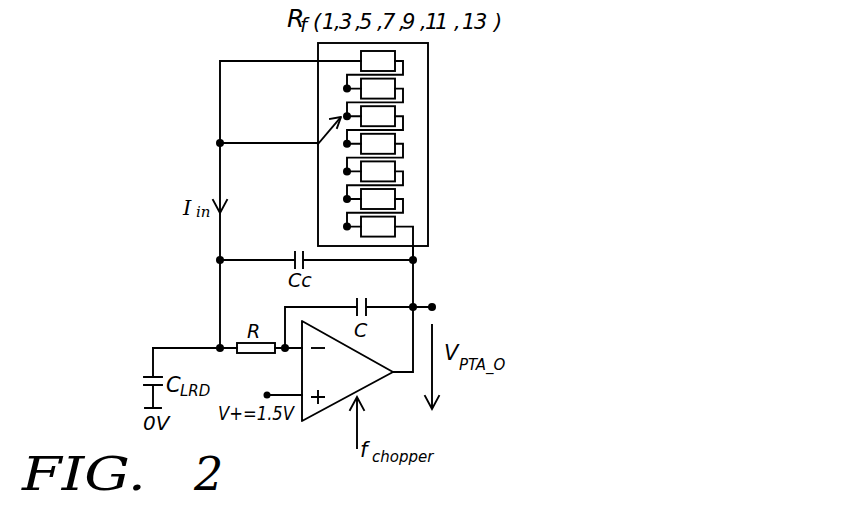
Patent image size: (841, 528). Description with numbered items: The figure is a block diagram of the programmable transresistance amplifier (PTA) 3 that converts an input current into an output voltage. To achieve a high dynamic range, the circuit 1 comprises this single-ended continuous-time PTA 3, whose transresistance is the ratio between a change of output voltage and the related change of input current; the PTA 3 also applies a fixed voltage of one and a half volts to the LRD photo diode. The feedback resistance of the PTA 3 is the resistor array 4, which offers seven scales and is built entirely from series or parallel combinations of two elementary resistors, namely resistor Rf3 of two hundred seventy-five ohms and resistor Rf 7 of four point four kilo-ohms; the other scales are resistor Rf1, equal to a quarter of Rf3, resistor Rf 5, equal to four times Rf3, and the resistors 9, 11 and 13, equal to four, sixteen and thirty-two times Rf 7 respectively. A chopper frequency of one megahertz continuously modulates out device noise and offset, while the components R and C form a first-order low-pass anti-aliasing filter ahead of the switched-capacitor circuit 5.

The circuit 1 is at (378, 61).
The programmable transresistance amplifier 3 is at (330, 406).
The feedback resistance 4 is at (349, 146).
The switched-capacitor circuit 5 is at (378, 116).
The feedback resistor Rf7 7 is at (378, 144).
The feedback resistor Rf9 9 is at (378, 171).
The feedback resistor Rf11 11 is at (378, 199).
The feedback resistor Rf13 13 is at (378, 227).